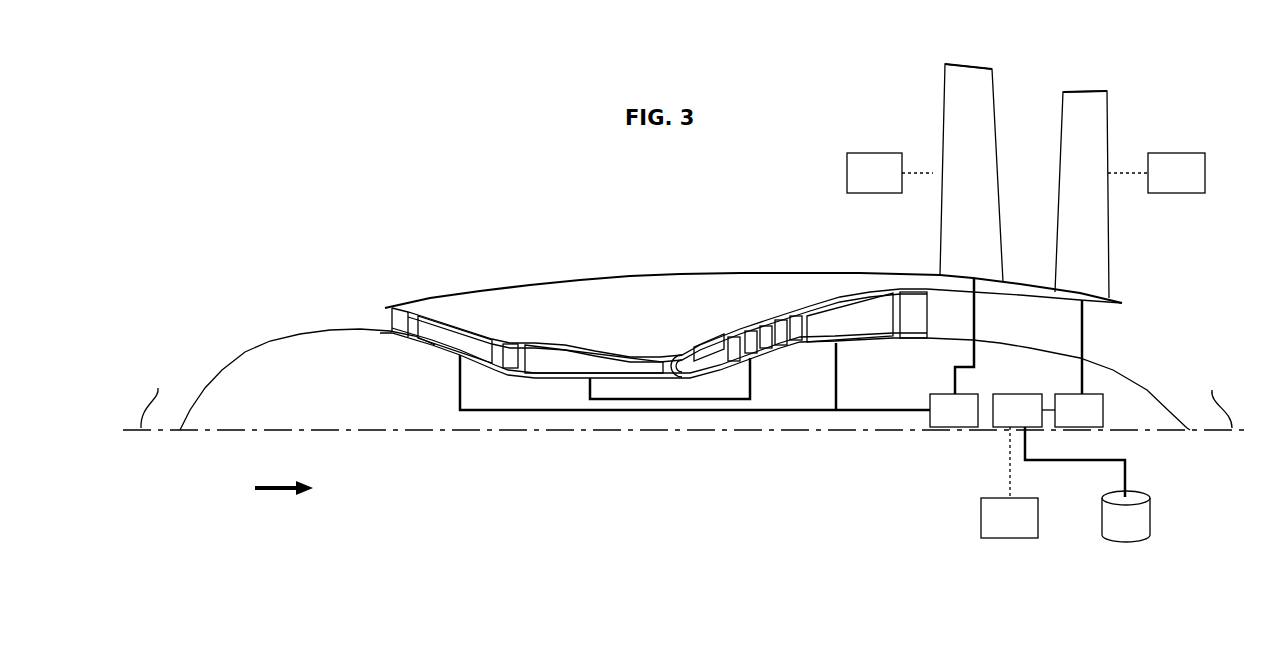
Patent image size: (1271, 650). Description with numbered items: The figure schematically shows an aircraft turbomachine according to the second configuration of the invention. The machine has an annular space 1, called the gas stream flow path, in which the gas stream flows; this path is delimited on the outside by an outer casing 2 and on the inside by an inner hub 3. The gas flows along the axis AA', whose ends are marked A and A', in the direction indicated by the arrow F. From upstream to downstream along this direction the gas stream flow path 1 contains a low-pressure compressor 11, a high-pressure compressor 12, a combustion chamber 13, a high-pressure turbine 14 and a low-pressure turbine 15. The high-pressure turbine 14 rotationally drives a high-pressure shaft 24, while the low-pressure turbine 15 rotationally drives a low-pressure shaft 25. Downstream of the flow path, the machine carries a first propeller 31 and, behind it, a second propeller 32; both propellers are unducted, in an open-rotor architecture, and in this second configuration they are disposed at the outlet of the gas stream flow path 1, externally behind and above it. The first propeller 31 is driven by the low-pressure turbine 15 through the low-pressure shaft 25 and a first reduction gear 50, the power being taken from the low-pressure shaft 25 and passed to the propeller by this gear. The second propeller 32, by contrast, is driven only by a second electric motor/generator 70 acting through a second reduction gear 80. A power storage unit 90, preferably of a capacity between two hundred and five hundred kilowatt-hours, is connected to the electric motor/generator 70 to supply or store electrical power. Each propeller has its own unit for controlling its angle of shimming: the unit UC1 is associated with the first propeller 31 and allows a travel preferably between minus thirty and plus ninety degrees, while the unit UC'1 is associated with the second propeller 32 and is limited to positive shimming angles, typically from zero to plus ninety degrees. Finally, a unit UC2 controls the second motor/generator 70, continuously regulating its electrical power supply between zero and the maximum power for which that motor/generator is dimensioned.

The annular space 1 is at (1122, 329).
The outer casing 2 is at (651, 321).
The inner hub 3 is at (331, 396).
The low-pressure compressor 11 is at (462, 340).
The high-pressure compressor 12 is at (597, 360).
The combustion chamber 13 is at (695, 360).
The high-pressure turbine 14 is at (765, 345).
The low-pressure turbine 15 is at (837, 327).
The high-pressure shaft 24 is at (752, 383).
The low-pressure shaft 25 is at (839, 382).
The first propeller 31 is at (969, 64).
The second propeller 32 is at (1083, 91).
The first reduction gear 50 is at (954, 352).
The second electric motor/generator 70 is at (1059, 446).
The second reduction gear 80 is at (1079, 363).
The power storage unit 90 is at (1126, 516).
The unit for controlling the angle of shimming of the first propeller UC1 is at (890, 173).
The unit for controlling the angle of shimming of the second propeller UC'1 is at (1156, 173).
The unit for controlling the second motor/generator UC2 is at (1009, 518).
The axis end point A is at (153, 397).
The axis end point A' is at (1218, 397).
The arrow indicating direction of flow F is at (284, 480).